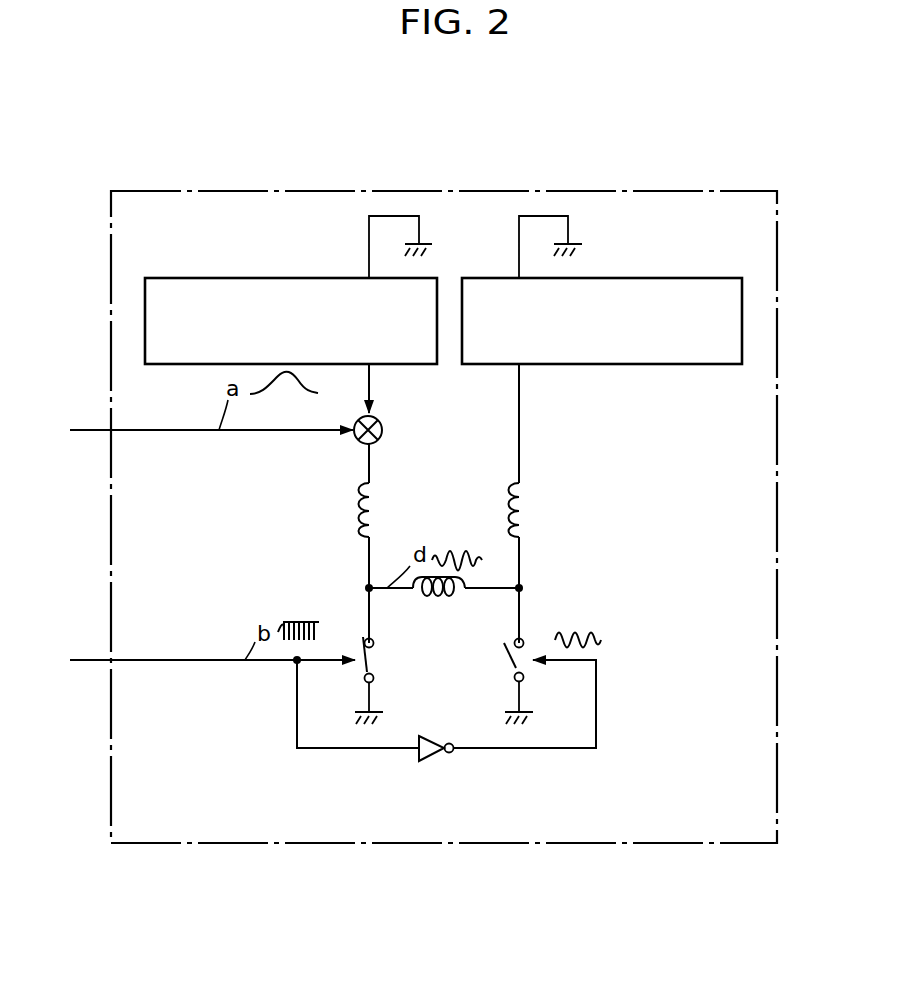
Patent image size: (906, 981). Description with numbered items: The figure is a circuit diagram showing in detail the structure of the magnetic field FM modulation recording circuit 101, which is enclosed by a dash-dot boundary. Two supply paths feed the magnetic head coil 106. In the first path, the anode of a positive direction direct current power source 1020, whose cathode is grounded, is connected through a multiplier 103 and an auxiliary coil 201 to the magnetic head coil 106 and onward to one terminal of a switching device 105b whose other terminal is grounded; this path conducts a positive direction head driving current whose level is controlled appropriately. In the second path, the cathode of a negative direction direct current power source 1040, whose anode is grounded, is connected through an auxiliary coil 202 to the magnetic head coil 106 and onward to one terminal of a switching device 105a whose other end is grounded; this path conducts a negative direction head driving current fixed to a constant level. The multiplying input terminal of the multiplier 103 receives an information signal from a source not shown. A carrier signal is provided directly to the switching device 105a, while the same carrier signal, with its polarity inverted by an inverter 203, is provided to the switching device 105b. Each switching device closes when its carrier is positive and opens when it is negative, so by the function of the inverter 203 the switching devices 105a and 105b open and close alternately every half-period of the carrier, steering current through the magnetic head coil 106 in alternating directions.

The magnetic field FM modulation recording circuit 101 is at (355, 191).
The positive direction direct current power source 1020 is at (302, 278).
The negative direction direct current power source 1040 is at (493, 278).
The multiplier 103 is at (383, 428).
The auxiliary coil 201 is at (360, 503).
The auxiliary coil 202 is at (526, 500).
The switching device 105a is at (356, 640).
The switching device 105b is at (530, 642).
The magnetic head coil 106 is at (440, 597).
The inverter 203 is at (427, 736).